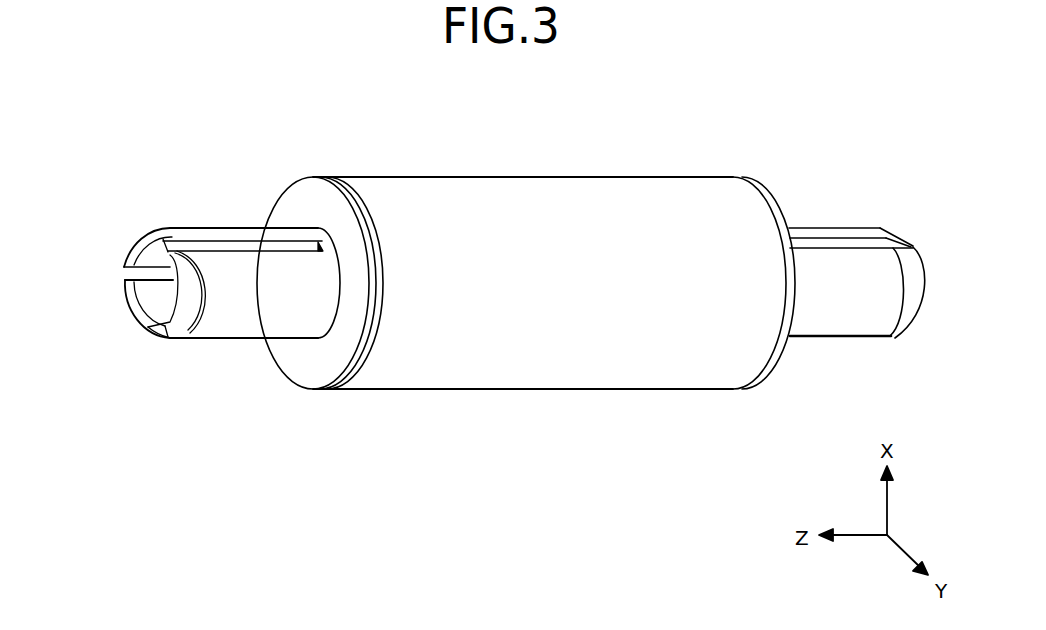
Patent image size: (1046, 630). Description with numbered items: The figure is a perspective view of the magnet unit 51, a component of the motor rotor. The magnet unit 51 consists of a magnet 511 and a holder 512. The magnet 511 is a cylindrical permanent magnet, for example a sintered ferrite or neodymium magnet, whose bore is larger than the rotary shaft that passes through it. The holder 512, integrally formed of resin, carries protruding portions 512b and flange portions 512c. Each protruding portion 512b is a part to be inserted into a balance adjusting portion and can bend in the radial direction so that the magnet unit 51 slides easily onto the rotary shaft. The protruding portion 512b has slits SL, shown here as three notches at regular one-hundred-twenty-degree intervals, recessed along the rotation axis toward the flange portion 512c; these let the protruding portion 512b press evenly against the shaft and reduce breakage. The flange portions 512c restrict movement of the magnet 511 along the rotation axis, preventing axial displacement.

The magnet unit 51 is at (829, 144).
The magnet 511 is at (632, 208).
The holder 512 is at (258, 421).
The protruding portion 512b is at (202, 262).
The flange portion 512c is at (302, 207).
The slit SL is at (122, 271).